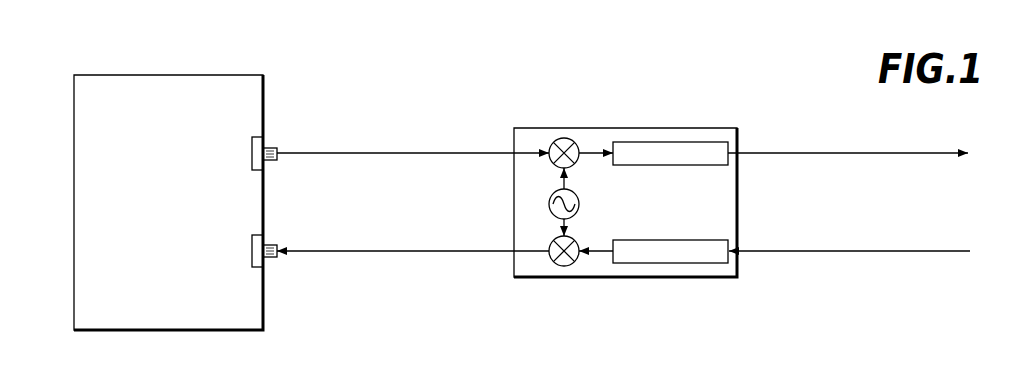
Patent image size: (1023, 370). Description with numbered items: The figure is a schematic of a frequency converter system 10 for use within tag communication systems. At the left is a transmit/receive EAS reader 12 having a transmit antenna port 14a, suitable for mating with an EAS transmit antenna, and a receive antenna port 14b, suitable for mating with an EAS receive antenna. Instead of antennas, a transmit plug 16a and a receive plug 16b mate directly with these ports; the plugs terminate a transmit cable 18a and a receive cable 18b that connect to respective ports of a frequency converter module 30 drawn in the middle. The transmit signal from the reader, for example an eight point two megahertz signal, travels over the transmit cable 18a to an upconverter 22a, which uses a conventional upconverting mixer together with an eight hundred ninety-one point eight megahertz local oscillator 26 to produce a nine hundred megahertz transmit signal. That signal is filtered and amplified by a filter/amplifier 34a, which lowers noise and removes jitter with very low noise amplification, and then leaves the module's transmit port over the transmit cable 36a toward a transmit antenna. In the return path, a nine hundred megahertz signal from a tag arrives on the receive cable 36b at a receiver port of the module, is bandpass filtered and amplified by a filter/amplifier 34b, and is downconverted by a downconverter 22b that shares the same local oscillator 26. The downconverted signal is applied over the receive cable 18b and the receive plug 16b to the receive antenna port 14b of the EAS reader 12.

The frequency converter system 10 is at (758, 70).
The transmit/receive EAS reader 12 is at (98, 82).
The transmit antenna port 14a is at (252, 154).
The receive antenna port 14b is at (252, 249).
The transmit plug 16a is at (272, 161).
The receive plug 16b is at (272, 258).
The transmit cable 18a is at (475, 151).
The receive cable 18b is at (477, 252).
The upconverter 22a is at (549, 158).
The downconverter 22b is at (564, 266).
The local oscillator 26 is at (549, 197).
The frequency converter module 30 is at (725, 278).
The filter/amplifier 34a is at (713, 165).
The filter/amplifier 34b is at (663, 263).
The transmit cable 36a is at (790, 152).
The receive cable 36b is at (783, 252).